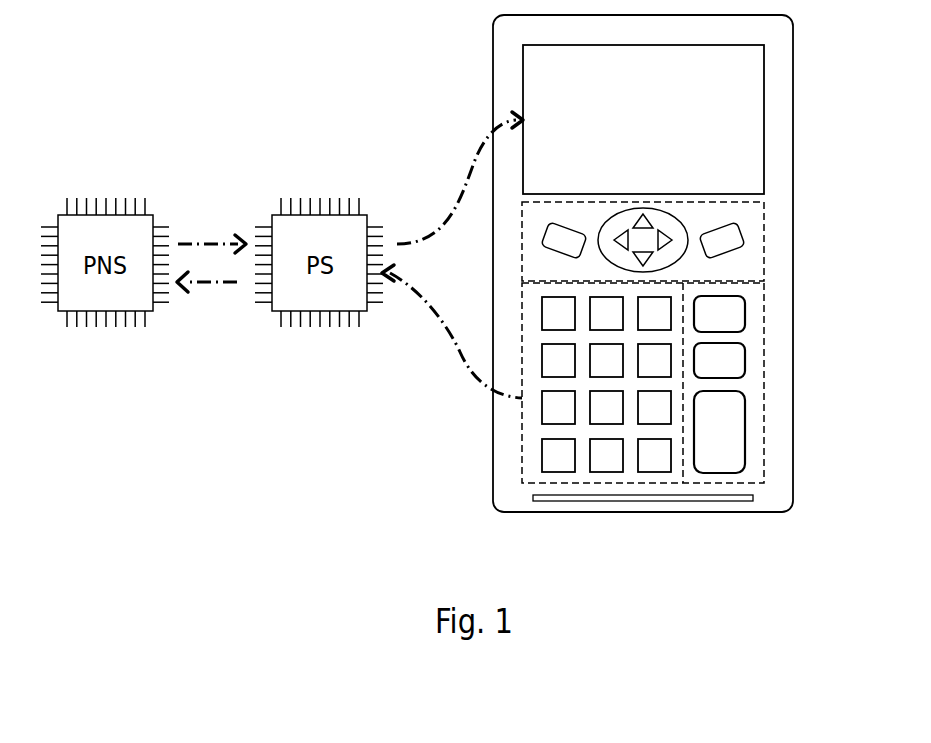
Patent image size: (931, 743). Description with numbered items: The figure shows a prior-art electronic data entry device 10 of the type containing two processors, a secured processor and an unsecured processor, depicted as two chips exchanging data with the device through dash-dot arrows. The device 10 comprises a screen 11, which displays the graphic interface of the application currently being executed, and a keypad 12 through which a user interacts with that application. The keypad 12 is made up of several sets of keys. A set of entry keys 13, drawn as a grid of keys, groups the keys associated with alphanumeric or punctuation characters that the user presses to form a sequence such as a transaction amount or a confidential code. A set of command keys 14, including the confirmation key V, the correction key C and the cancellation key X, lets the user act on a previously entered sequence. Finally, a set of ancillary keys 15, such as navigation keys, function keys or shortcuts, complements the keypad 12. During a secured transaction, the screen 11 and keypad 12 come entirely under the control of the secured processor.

The electronic data entry device 10 is at (793, 33).
The screen 11 is at (764, 118).
The keypad 12 is at (645, 396).
The set of entry keys 13 is at (526, 463).
The set of command keys 14 is at (753, 432).
The set of ancillary keys 15 is at (753, 235).